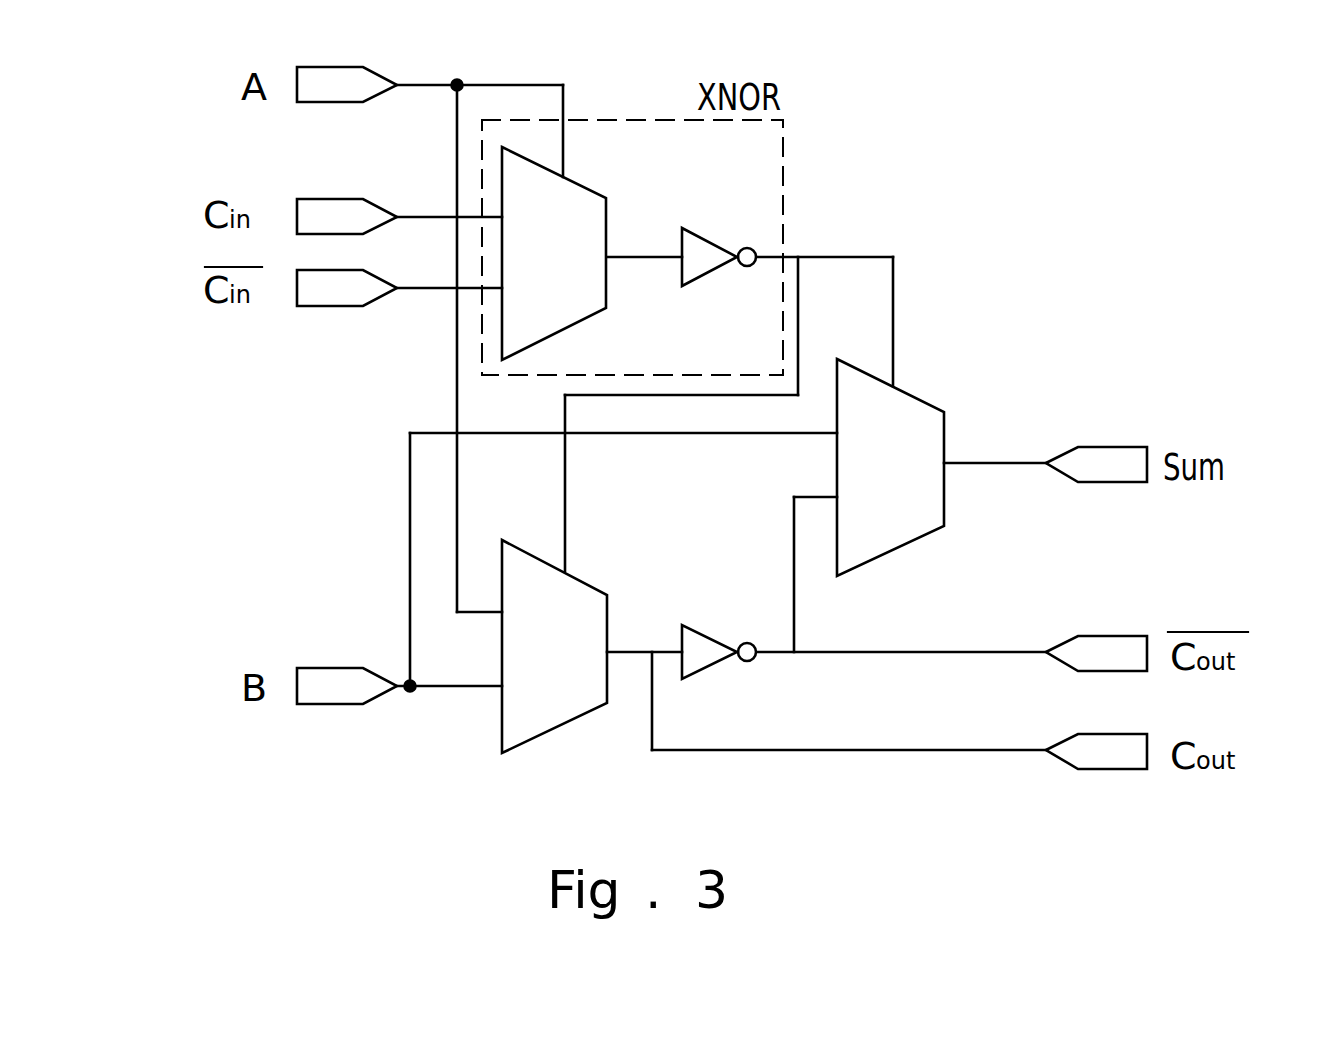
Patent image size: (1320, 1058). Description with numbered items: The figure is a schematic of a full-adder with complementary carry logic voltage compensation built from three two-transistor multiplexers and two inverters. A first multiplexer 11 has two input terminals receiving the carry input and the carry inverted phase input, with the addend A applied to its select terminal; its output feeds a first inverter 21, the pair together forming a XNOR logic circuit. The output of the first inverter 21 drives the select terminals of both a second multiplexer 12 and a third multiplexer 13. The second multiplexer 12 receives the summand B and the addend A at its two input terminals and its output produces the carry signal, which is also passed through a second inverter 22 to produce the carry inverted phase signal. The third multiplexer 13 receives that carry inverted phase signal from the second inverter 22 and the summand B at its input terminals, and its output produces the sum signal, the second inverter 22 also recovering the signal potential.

The first multiplexer 11 is at (568, 192).
The second multiplexer 12 is at (562, 585).
The third multiplexer 13 is at (904, 400).
The first inverter 21 is at (710, 250).
The second inverter 22 is at (703, 645).